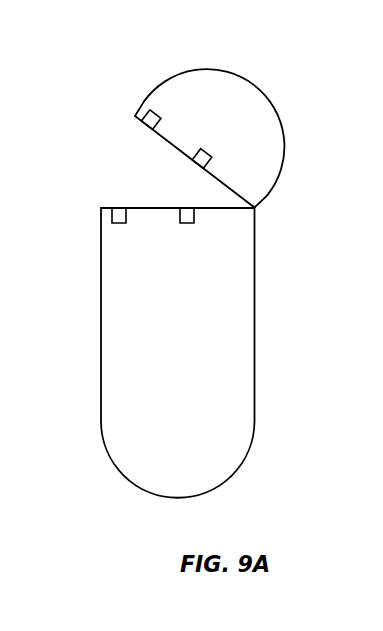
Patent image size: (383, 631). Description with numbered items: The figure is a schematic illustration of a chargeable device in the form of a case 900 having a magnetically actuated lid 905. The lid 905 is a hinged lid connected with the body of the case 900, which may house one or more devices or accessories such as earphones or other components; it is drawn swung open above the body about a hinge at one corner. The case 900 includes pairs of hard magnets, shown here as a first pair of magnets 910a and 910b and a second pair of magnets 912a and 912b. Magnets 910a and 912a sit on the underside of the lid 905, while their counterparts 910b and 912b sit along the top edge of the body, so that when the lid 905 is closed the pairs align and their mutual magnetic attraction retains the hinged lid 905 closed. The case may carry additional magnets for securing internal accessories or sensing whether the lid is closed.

The case 900 is at (105, 75).
The magnetically actuated lid 905 is at (278, 113).
The magnet 910a is at (212, 158).
The magnet 910b is at (184, 224).
The magnet 912a is at (151, 110).
The magnet 912b is at (102, 208).